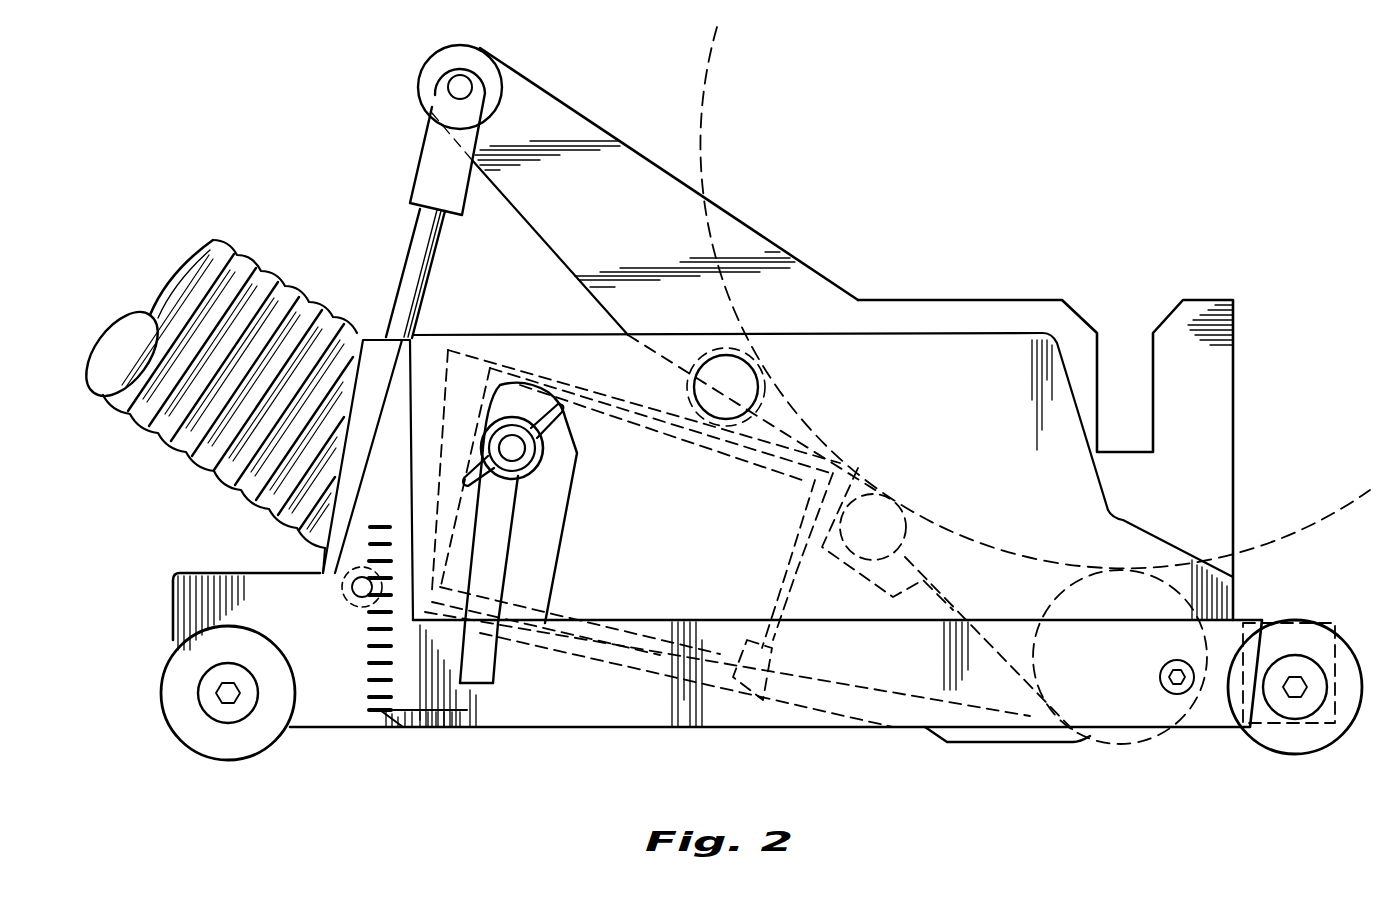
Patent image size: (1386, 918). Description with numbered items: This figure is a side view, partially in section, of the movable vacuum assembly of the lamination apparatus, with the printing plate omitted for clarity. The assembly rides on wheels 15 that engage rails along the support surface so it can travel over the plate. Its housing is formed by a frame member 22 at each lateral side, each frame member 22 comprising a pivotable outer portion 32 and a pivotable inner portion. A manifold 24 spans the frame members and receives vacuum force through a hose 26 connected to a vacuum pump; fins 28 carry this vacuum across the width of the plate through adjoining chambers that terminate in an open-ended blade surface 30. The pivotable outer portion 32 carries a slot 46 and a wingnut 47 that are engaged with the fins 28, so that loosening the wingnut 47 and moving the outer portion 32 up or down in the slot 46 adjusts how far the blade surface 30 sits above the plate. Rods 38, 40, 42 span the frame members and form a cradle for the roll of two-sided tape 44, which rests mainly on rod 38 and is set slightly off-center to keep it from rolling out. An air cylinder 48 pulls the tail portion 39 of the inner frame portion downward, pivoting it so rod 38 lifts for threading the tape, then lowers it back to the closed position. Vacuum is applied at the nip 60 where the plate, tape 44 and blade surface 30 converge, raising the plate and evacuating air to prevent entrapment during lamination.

The wheels 15 is at (267, 753).
The frame member 22 is at (958, 445).
The manifold 24 is at (612, 390).
The hose 26 is at (280, 295).
The fins 28 is at (852, 693).
The blade surface 30 is at (1003, 743).
The pivotable outer portion 32 is at (623, 713).
The rod 38 is at (1160, 733).
The tail portion 39 is at (520, 102).
The rod 40 is at (898, 545).
The rod 42 is at (712, 352).
The roll of two-sided tape 44 is at (706, 82).
The slot 46 is at (478, 665).
The wingnut 47 is at (539, 412).
The air cylinder 48 is at (392, 332).
The nip 60 is at (1088, 758).